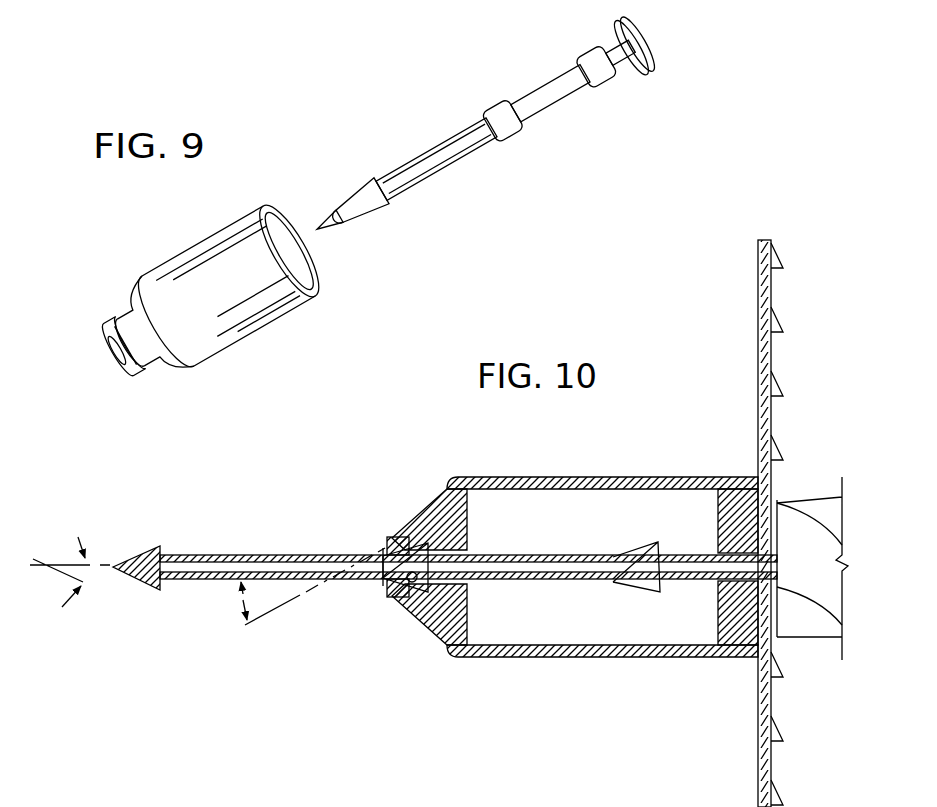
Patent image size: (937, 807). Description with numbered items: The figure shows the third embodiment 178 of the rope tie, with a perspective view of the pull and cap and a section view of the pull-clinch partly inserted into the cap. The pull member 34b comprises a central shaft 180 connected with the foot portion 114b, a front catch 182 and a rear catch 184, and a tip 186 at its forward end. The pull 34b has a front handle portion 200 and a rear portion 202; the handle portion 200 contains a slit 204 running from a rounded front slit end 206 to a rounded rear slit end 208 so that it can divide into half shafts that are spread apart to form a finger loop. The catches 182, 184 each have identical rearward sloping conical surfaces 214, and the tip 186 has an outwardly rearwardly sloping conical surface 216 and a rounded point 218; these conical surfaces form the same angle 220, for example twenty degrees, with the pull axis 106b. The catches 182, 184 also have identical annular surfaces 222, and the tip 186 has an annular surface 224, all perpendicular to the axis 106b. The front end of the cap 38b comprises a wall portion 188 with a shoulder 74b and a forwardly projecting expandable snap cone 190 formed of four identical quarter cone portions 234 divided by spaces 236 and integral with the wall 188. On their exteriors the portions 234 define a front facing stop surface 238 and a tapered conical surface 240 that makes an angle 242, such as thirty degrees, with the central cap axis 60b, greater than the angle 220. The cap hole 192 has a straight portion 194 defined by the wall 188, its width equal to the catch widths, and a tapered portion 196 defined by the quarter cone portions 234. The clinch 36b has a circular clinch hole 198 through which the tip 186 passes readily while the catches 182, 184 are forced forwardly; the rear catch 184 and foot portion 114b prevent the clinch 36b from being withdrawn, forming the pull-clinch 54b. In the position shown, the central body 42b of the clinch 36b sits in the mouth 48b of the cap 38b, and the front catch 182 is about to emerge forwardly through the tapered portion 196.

In FIG. 9, the third embodiment 178 is at (440, 95).
In FIG. 10, the third embodiment 178 is at (453, 445).
In FIG. 9, the pull member 34b is at (428, 145).
In FIG. 10, the pull member 34b is at (250, 547).
In FIG. 9, the central shaft 180 is at (407, 162).
In FIG. 10, the central shaft 180 is at (307, 529).
In FIG. 9, the front handle portion 200 is at (386, 176).
In FIG. 10, the front handle portion 200 is at (240, 546).
In FIG. 9, the front catch 182 is at (505, 135).
In FIG. 10, the front catch 182 is at (413, 588).
In FIG. 9, the rear catch 184 is at (604, 84).
In FIG. 10, the rear catch 184 is at (627, 590).
In FIG. 9, the foot portion 114b is at (637, 66).
In FIG. 10, the foot portion 114b is at (767, 517).
In FIG. 9, the rear portion 202 is at (558, 112).
In FIG. 10, the rear portion 202 is at (537, 595).
In FIG. 9, the rearward sloping conical surface 214 is at (605, 100).
In FIG. 10, the rearward sloping conical surface 214 is at (427, 600).
In FIG. 9, the slit 204 is at (420, 170).
In FIG. 10, the slit 204 is at (236, 556).
In FIG. 9, the tip 186 is at (377, 219).
In FIG. 10, the tip 186 is at (133, 583).
In FIG. 9, the conical surface of tip 216 is at (360, 226).
In FIG. 10, the conical surface of tip 216 is at (133, 556).
In FIG. 9, the rounded point 218 is at (337, 231).
In FIG. 10, the rounded point 218 is at (116, 560).
In FIG. 9, the pull axis 106b is at (323, 232).
In FIG. 10, the pull axis 106b is at (108, 575).
In FIG. 9, the shoulder 74b is at (137, 278).
In FIG. 10, the shoulder 74b is at (437, 482).
In FIG. 9, the wall portion 188 is at (120, 306).
In FIG. 10, the wall portion 188 is at (425, 482).
In FIG. 9, the quarter cone portion 234 is at (118, 330).
In FIG. 10, the quarter cone portion 234 is at (392, 548).
In FIG. 9, the snap cone portion 190 is at (107, 357).
In FIG. 10, the snap cone portion 190 is at (407, 535).
In FIG. 9, the cap hole 192 is at (120, 358).
In FIG. 10, the cap hole 192 is at (430, 600).
In FIG. 9, the stop surface 238 is at (140, 362).
In FIG. 10, the stop surface 238 is at (387, 547).
In FIG. 9, the tapered conical surface 240 is at (148, 365).
In FIG. 10, the tapered conical surface 240 is at (400, 540).
In FIG. 9, the spaces 236 is at (182, 362).
In FIG. 10, the cap 38b is at (540, 475).
In FIG. 10, the central body 42b is at (720, 478).
In FIG. 10, the clinch 36b is at (752, 338).
In FIG. 10, the pull-clinch 54b is at (752, 385).
In FIG. 10, the central cap axis 60b is at (547, 560).
In FIG. 10, the angle 220 is at (102, 573).
In FIG. 10, the front slit end 206 is at (163, 587).
In FIG. 10, the angle 242 is at (240, 612).
In FIG. 10, the annular surface of tip 224 is at (157, 585).
In FIG. 10, the rear slit end 208 is at (387, 580).
In FIG. 10, the tapered portion 196 is at (400, 578).
In FIG. 10, the annular surfaces 222 is at (423, 600).
In FIG. 10, the straight portion 194 is at (478, 588).
In FIG. 10, the clinch hole 198 is at (718, 585).
In FIG. 10, the mouth 48b is at (722, 633).